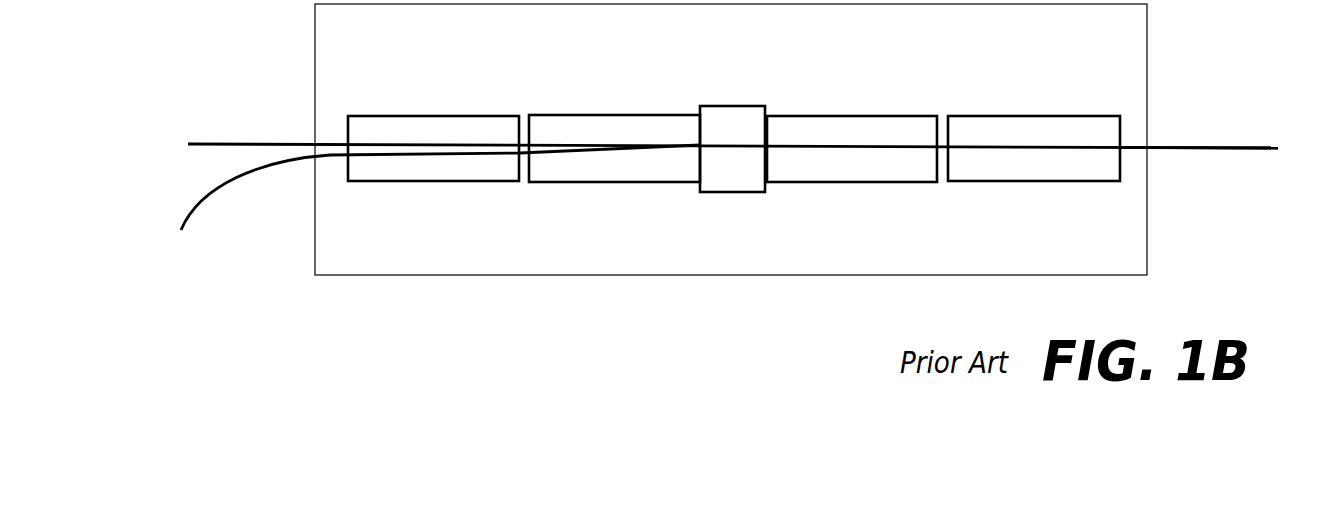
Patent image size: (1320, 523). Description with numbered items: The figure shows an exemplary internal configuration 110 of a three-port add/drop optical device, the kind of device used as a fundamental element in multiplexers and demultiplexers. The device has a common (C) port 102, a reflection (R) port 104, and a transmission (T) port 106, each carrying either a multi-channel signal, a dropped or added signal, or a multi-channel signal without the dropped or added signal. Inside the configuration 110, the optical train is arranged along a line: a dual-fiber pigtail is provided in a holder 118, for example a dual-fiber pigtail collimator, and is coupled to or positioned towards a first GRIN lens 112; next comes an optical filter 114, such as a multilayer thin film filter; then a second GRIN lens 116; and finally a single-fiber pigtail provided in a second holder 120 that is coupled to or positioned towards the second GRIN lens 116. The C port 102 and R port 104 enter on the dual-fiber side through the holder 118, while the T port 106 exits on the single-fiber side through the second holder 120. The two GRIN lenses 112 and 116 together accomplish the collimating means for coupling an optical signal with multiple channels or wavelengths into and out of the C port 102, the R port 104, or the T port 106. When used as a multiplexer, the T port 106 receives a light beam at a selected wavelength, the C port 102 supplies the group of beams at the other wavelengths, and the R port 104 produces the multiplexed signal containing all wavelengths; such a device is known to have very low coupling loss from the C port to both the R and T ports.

The common (C) port 102 is at (727, 113).
The reflection (R) port 104 is at (440, 208).
The transmission (T) port 106 is at (1209, 106).
The internal configuration 110 is at (731, 139).
The first GRIN lens 112 is at (614, 117).
The optical filter 114 is at (732, 122).
The second GRIN lens 116 is at (852, 117).
The holder 118 is at (433, 117).
The second holder 120 is at (1034, 116).